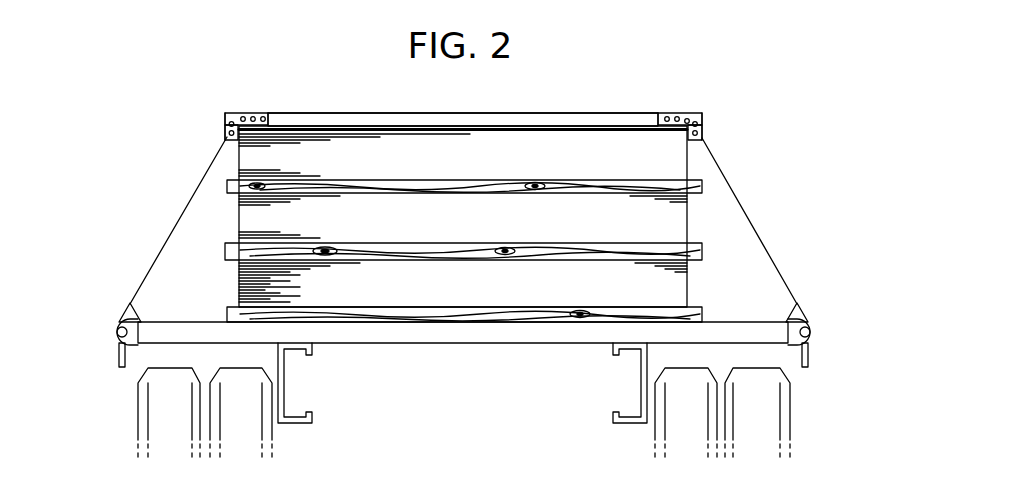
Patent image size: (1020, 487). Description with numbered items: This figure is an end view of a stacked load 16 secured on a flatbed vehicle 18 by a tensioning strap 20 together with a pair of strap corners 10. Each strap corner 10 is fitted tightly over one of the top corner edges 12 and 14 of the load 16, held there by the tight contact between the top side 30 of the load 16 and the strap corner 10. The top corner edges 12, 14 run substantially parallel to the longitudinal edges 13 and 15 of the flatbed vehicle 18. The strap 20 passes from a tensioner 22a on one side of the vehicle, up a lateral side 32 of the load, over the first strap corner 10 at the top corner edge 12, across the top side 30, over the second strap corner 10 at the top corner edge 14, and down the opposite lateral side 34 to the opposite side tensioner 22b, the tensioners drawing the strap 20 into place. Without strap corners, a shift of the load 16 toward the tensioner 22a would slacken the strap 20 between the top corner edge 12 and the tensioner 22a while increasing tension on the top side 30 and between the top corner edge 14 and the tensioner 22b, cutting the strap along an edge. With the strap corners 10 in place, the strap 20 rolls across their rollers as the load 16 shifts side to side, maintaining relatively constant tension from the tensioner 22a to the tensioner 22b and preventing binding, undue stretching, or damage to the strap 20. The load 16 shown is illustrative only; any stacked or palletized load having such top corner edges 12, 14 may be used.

The strap corner 10 is at (233, 110).
The top corner edge 12 is at (238, 126).
The longitudinal edge 13 is at (137, 323).
The top corner edge 14 is at (703, 121).
The longitudinal edge 15 is at (793, 322).
The stacked load 16 is at (616, 114).
The flatbed vehicle 18 is at (420, 345).
The strap 20 is at (402, 113).
The tensioner 22a is at (118, 345).
The tensioner 22b is at (813, 344).
The top side 30 is at (540, 125).
The lateral side 32 is at (238, 210).
The wooden plank 34 is at (688, 215).